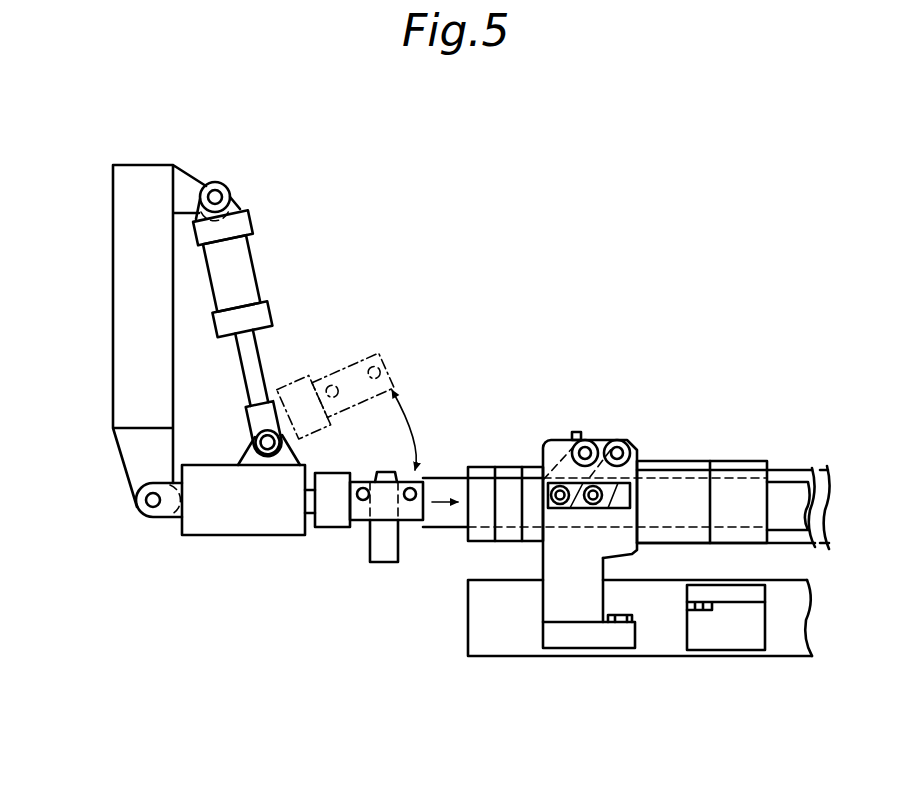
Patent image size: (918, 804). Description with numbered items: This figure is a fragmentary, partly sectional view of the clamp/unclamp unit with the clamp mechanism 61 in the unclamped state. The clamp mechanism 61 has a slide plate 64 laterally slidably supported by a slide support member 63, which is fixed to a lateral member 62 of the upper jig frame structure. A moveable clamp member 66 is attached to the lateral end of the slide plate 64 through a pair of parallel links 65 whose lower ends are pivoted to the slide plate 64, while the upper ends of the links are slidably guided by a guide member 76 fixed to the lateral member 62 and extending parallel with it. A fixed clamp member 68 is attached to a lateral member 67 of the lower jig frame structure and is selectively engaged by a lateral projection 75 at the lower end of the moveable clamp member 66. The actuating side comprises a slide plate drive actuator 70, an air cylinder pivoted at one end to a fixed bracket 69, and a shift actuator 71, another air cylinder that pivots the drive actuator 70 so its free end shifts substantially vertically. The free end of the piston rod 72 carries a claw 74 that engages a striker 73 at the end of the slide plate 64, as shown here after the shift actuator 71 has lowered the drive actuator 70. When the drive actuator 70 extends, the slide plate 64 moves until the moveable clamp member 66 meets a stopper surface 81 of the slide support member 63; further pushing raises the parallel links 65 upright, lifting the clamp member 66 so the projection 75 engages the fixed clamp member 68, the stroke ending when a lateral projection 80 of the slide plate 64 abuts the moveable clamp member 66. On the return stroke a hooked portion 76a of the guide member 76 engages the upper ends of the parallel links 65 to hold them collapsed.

The clamp mechanism 61 is at (683, 453).
The lateral member 62 is at (815, 462).
The slide support member 63 is at (762, 492).
The slide plate 64 is at (437, 527).
The parallel links 65 is at (624, 430).
The moveable clamp member 66 is at (548, 602).
The lateral member 67 is at (783, 648).
The fixed clamp member 68 is at (727, 598).
The fixed bracket 69 is at (120, 330).
The slide plate drive actuator 70 is at (220, 537).
The shift actuator 71 is at (252, 273).
The piston rod 72 is at (309, 533).
The striker 73 is at (387, 472).
The claw 74 is at (423, 493).
The lateral projection 75 is at (635, 638).
The guide member 76 is at (650, 462).
The hooked portion 76a is at (577, 432).
The lateral projection 80 is at (510, 480).
The stopper surface 81 is at (708, 490).